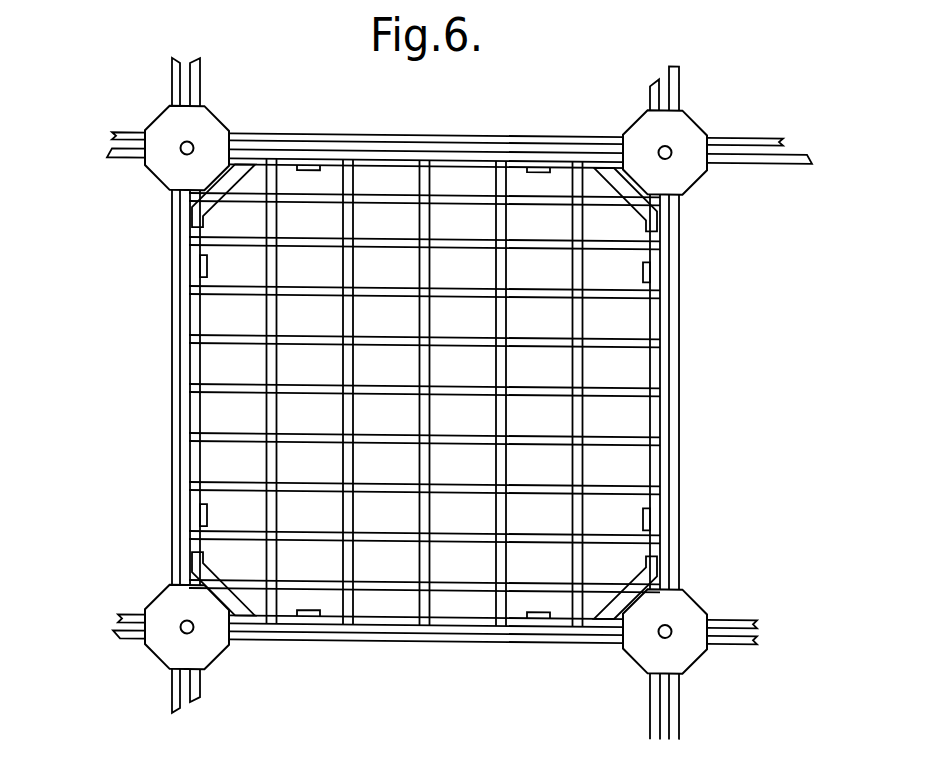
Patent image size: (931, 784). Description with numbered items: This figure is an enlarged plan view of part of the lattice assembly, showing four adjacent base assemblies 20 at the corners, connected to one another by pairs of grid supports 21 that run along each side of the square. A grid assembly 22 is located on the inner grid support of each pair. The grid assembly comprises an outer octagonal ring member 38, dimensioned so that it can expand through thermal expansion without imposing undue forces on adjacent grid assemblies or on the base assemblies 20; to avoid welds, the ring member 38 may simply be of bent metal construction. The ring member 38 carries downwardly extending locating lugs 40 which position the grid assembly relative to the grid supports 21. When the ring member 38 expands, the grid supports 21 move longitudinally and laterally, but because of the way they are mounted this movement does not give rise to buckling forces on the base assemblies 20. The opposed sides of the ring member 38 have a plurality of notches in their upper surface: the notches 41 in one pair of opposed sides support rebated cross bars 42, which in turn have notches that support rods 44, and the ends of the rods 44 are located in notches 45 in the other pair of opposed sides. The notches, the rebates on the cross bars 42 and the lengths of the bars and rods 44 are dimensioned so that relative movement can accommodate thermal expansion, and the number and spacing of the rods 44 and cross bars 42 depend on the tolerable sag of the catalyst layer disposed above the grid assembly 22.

The base assembly 20 is at (212, 123).
The grid support 21 is at (597, 147).
The grid assembly 22 is at (692, 270).
The outer octagonal ring member 38 is at (197, 276).
The locating lug 40 is at (317, 164).
The notch 41 is at (425, 641).
The cross bar 42 is at (423, 578).
The rod 44 is at (303, 534).
The notch 45 is at (660, 445).